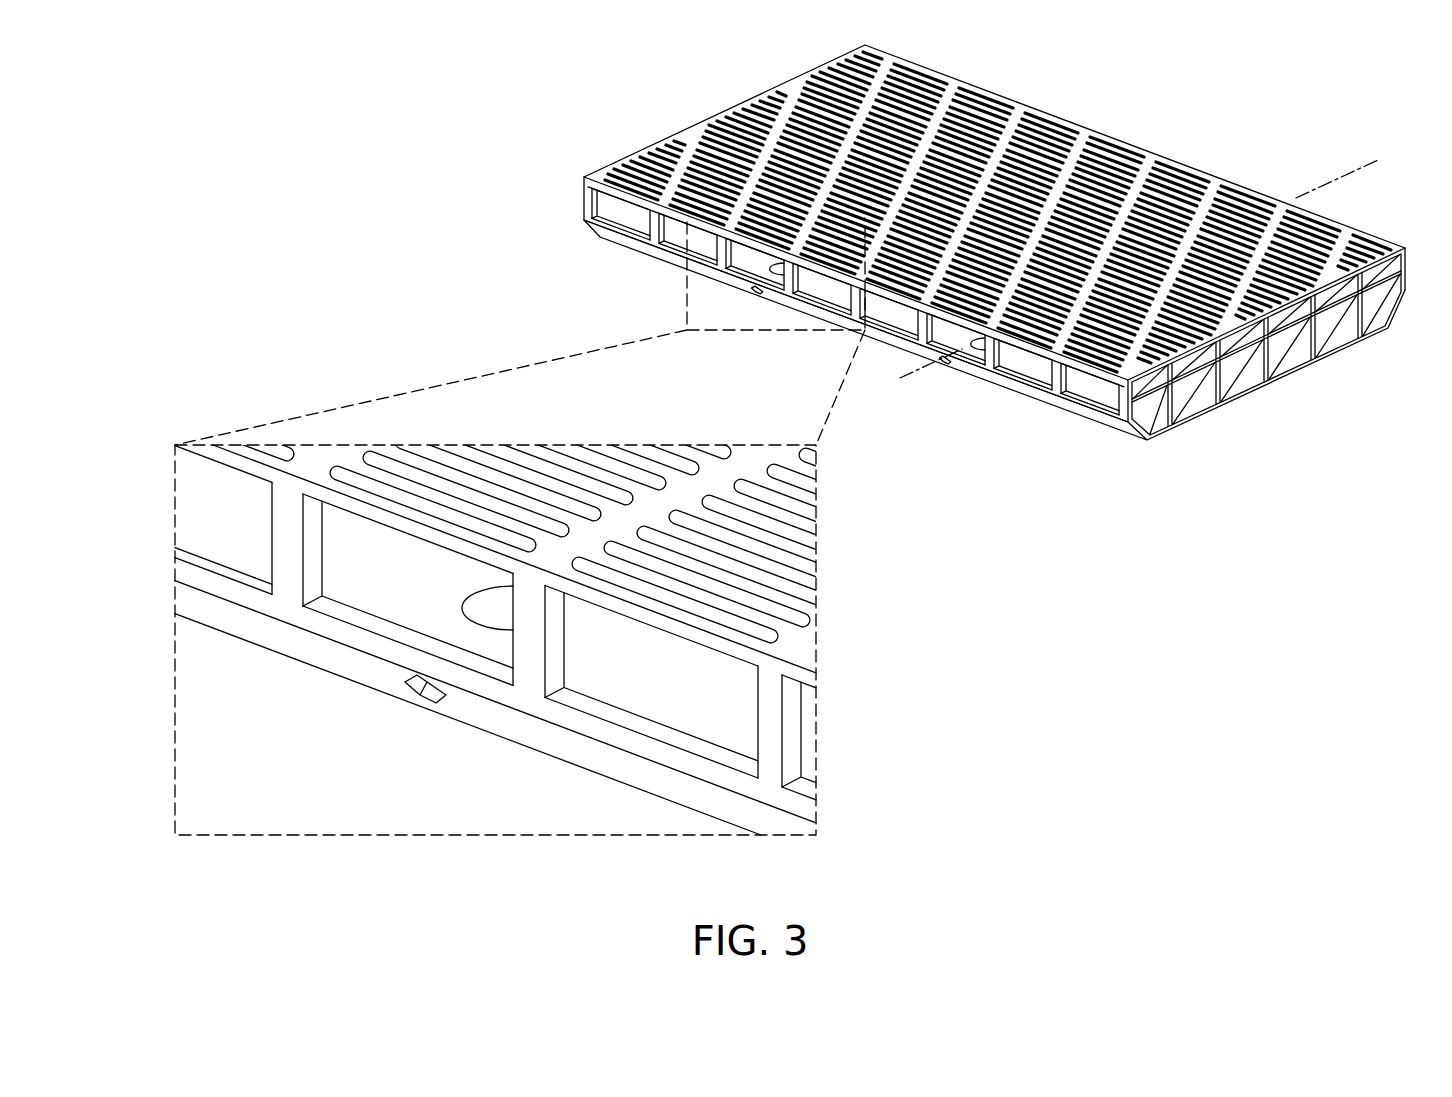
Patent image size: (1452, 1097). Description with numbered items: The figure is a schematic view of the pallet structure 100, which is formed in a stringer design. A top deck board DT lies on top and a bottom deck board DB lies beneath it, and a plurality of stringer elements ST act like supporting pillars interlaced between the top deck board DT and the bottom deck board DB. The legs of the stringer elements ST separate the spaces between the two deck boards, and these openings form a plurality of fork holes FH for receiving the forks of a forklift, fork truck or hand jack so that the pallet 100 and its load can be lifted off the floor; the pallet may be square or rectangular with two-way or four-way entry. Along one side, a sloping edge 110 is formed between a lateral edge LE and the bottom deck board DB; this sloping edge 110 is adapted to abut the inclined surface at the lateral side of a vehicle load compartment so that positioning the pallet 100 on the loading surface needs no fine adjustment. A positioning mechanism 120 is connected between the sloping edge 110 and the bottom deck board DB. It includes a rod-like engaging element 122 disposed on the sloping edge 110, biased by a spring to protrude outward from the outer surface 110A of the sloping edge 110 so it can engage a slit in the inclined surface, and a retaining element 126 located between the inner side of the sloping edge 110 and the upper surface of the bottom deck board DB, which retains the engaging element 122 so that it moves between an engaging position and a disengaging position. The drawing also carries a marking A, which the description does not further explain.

The pallet structure 100 is at (763, 474).
The sloping edge 110 is at (920, 352).
The outer surface 110A is at (527, 584).
The positioning mechanism 120 is at (653, 584).
The engaging element 122 is at (410, 693).
The retaining element 126 is at (497, 612).
The top deck board DT is at (1007, 150).
The lateral edge LE is at (1308, 212).
The stringer elements ST is at (1060, 376).
The bottom deck board DB is at (1238, 400).
The fork holes FH is at (1273, 330).
The section line A- A is at (1379, 161).